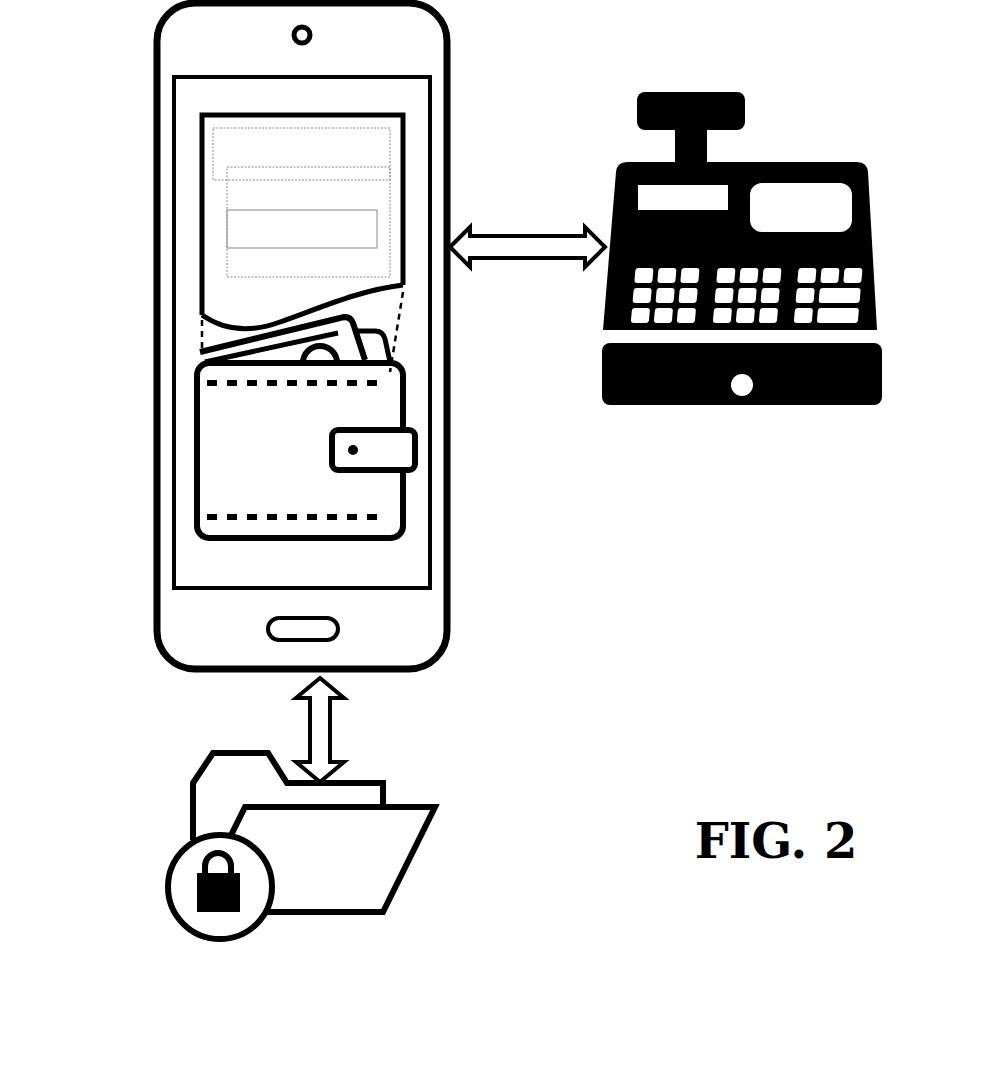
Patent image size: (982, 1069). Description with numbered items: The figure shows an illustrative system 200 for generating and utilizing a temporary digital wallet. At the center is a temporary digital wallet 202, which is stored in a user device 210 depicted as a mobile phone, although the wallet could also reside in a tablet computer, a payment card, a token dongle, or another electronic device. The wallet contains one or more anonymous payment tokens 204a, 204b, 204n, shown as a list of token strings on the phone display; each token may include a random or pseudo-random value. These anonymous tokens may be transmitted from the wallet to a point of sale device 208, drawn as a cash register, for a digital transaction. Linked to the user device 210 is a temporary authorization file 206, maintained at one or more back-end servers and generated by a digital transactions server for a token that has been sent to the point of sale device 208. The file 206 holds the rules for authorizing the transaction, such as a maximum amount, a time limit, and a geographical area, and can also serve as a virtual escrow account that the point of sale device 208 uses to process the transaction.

The system 200 is at (771, 780).
The temporary digital wallet 202 is at (302, 336).
The anonymous payment token 204a is at (237, 155).
The anonymous payment token 204b is at (240, 203).
The anonymous payment token 204n is at (237, 253).
The temporary authorization file 206 is at (301, 882).
The point of sale device 208 is at (742, 282).
The user device 210 is at (380, 730).